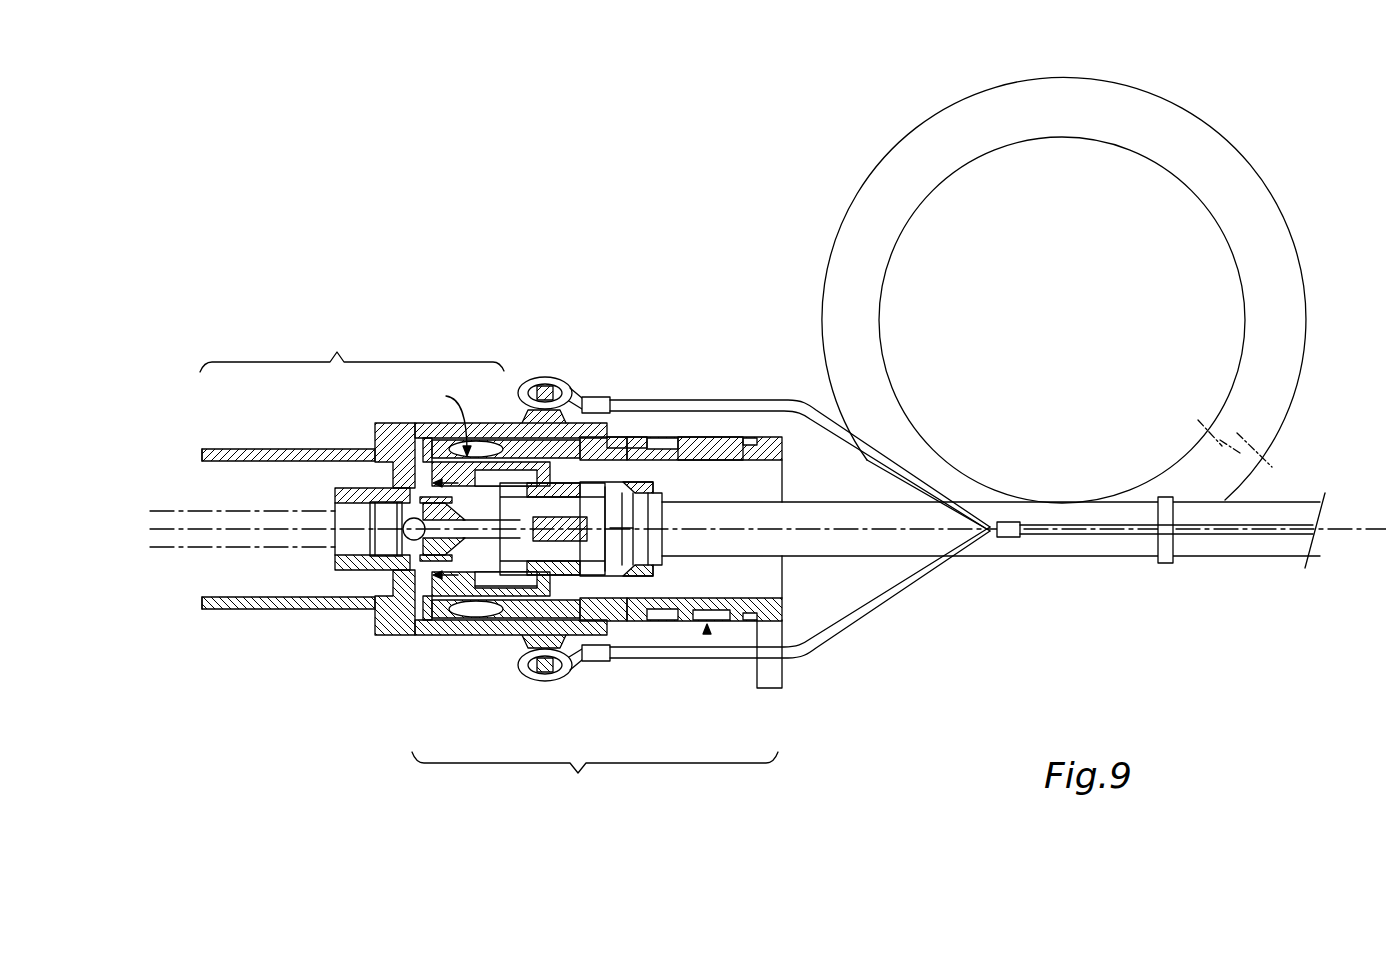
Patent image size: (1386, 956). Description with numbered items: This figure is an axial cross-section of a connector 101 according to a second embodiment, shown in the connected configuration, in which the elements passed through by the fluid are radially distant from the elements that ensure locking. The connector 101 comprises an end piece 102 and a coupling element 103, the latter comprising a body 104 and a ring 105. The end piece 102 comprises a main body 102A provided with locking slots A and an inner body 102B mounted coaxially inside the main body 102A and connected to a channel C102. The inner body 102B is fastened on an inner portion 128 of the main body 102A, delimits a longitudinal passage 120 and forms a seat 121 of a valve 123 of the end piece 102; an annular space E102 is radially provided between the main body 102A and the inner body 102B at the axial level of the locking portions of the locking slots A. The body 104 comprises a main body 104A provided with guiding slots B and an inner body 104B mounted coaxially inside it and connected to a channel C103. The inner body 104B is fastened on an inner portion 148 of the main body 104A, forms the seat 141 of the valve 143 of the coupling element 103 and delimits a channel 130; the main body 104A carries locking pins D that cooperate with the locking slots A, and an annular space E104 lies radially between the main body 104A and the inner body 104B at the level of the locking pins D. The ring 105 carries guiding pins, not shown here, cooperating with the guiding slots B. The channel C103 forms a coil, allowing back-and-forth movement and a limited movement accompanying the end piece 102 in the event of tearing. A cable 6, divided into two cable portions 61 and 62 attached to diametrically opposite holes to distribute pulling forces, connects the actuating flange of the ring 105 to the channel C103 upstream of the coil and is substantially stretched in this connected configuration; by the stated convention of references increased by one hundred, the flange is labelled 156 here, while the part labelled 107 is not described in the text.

The connector 101 is at (403, 280).
The end piece 102 is at (352, 348).
The main body of the end piece 102A is at (205, 449).
The inner body of the end piece 102B is at (350, 490).
The coupling element 103 is at (595, 775).
The body of the coupling element 104 is at (772, 318).
The main body of the coupling element body 104A is at (712, 440).
The inner body of the coupling element body 104B is at (641, 440).
The ring 105 is at (513, 423).
The nut 107 is at (647, 480).
The longitudinal passage 120 is at (342, 529).
The seat 121 is at (520, 585).
The valve 123 is at (437, 545).
The inner portion 128 is at (377, 580).
The channel 130 is at (552, 529).
The seat 141 is at (432, 600).
The valve 143 is at (553, 681).
The inner portion 148 is at (614, 620).
The first ring terminal 156 is at (566, 394).
The cable 6 is at (1012, 540).
The cable portion 61 is at (735, 405).
The cable portion 62 is at (665, 656).
The locking slots A is at (449, 418).
The guiding slots B is at (707, 632).
The channel C102 is at (190, 566).
The channel C103 is at (1291, 513).
The locking pins D is at (476, 600).
The annular space E102 is at (425, 482).
The annular space E104 is at (500, 600).